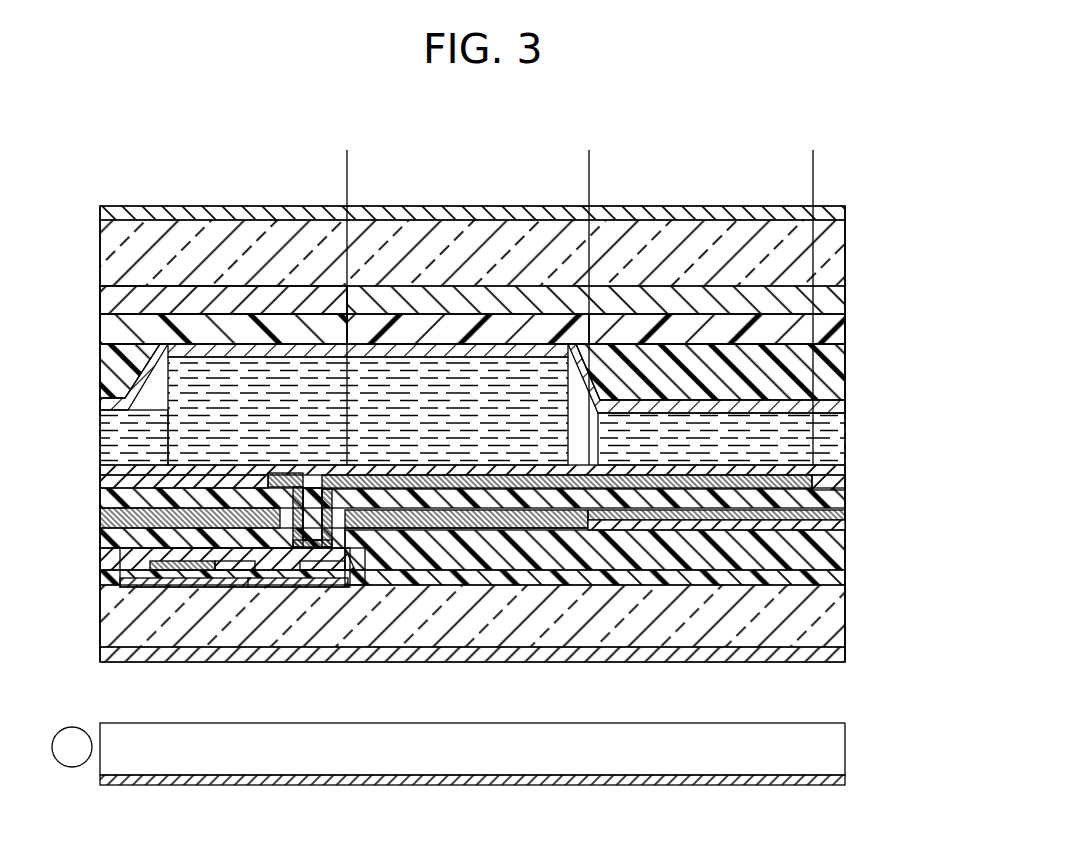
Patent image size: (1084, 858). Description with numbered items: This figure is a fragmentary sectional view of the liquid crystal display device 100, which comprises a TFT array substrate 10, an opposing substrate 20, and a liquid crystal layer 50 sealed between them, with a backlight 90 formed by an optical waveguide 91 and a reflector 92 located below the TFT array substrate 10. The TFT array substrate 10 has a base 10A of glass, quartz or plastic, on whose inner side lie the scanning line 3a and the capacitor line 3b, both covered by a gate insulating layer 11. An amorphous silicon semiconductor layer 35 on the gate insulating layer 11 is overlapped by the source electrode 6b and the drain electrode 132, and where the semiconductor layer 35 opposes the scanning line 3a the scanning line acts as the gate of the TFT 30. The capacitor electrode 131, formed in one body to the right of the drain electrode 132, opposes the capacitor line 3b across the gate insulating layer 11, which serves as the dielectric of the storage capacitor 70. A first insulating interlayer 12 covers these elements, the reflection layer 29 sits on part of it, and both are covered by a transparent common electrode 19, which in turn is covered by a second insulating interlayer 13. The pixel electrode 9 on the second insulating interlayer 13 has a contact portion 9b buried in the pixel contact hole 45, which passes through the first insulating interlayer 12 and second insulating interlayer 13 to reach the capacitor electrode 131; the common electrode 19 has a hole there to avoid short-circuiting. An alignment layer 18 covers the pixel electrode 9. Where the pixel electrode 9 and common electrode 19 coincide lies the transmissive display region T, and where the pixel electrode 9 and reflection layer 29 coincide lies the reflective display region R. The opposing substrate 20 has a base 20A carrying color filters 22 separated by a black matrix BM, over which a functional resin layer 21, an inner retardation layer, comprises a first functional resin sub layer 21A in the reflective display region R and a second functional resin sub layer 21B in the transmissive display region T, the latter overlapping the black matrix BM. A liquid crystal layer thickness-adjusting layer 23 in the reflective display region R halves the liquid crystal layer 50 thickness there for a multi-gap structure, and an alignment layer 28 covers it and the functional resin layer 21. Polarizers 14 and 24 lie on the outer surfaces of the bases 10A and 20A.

The liquid crystal display device 100 is at (862, 178).
The opposing substrate 20 is at (100, 207).
The polarizer 24 is at (843, 215).
The base 20A is at (843, 256).
The color filters 22 is at (843, 300).
The black matrix BM is at (160, 305).
The functional resin layer 21 is at (843, 328).
The first functional resin sub layer 21A is at (253, 328).
The second functional resin sub layer 21B is at (415, 328).
The liquid crystal layer thickness-adjusting layer 23 is at (838, 366).
The alignment layer 28 is at (838, 405).
The liquid crystal layer 50 is at (838, 431).
The transmissive display region T is at (587, 162).
The reflective display region R is at (811, 162).
The TFT array substrate 10 is at (100, 466).
The alignment layer 18 is at (833, 486).
The second insulating interlayer 13 is at (830, 502).
The contact portion 9b is at (287, 477).
The pixel contact hole 45 is at (322, 490).
The pixel electrode 9 is at (476, 480).
The common electrode 19 is at (234, 518).
The reflection layer 29 is at (732, 510).
The first insulating interlayer 12 is at (835, 545).
The source electrode 6b is at (122, 556).
The scanning line 3a is at (208, 585).
The gate insulating layer 11 is at (835, 578).
The semiconductor layer 35 is at (170, 588).
The capacitor electrode 131 is at (345, 587).
The drain electrode 132 is at (240, 585).
The capacitor line 3b is at (328, 585).
The storage capacitor 70 is at (366, 583).
The TFT 30 is at (145, 600).
The base 10A is at (835, 620).
The polarizer 14 is at (835, 655).
The backlight 90 is at (913, 723).
The optical waveguide 91 is at (835, 745).
The reflector 92 is at (835, 782).